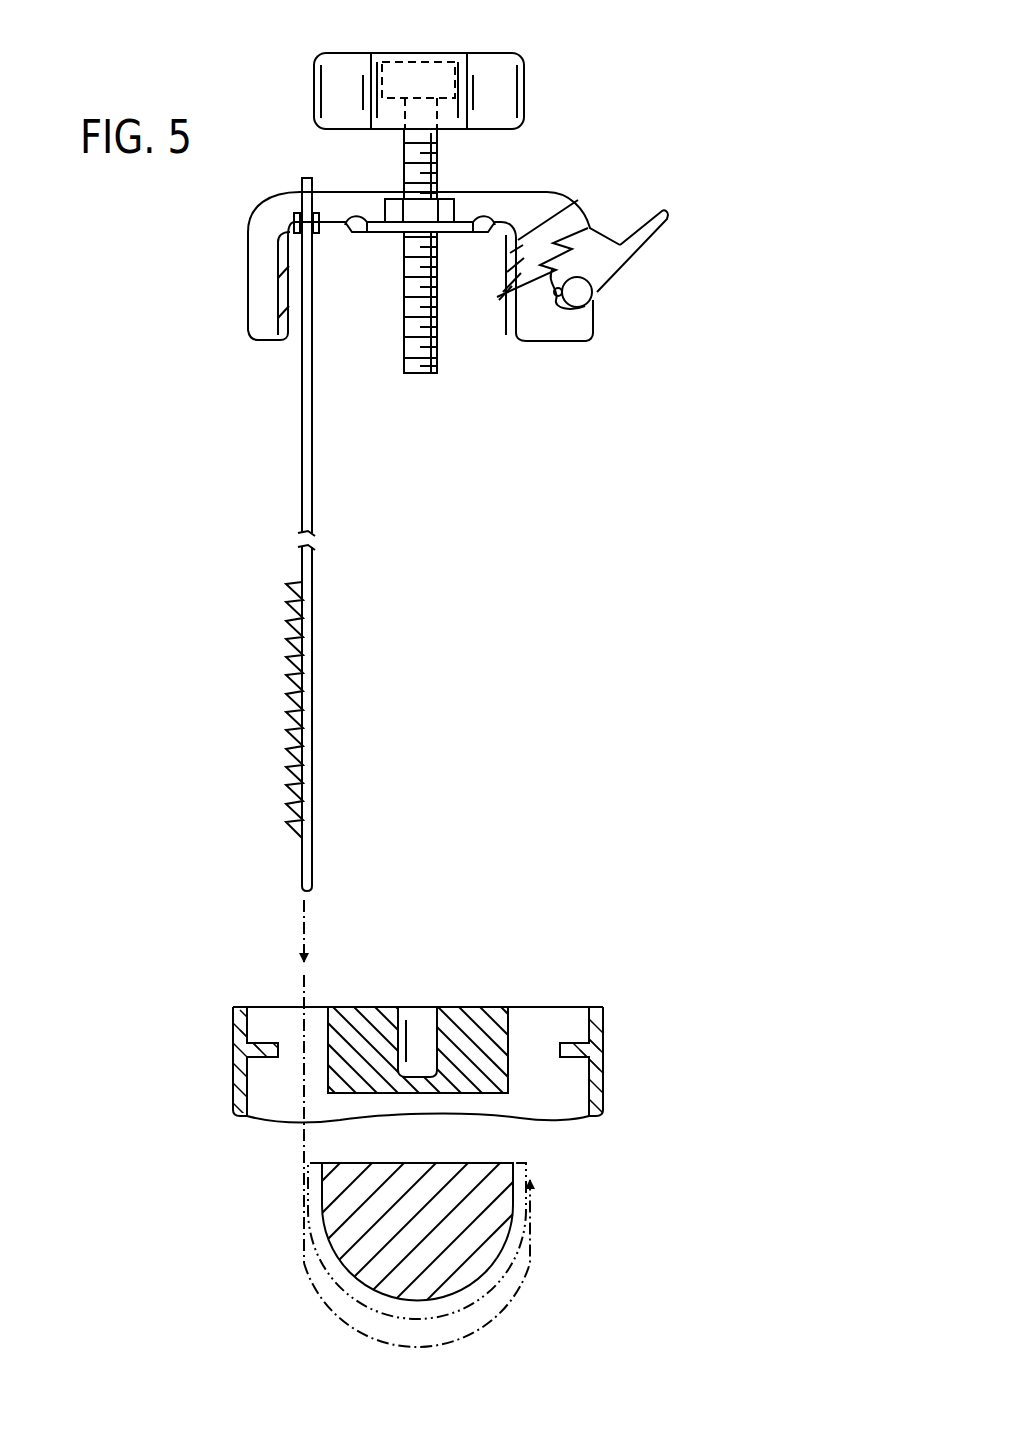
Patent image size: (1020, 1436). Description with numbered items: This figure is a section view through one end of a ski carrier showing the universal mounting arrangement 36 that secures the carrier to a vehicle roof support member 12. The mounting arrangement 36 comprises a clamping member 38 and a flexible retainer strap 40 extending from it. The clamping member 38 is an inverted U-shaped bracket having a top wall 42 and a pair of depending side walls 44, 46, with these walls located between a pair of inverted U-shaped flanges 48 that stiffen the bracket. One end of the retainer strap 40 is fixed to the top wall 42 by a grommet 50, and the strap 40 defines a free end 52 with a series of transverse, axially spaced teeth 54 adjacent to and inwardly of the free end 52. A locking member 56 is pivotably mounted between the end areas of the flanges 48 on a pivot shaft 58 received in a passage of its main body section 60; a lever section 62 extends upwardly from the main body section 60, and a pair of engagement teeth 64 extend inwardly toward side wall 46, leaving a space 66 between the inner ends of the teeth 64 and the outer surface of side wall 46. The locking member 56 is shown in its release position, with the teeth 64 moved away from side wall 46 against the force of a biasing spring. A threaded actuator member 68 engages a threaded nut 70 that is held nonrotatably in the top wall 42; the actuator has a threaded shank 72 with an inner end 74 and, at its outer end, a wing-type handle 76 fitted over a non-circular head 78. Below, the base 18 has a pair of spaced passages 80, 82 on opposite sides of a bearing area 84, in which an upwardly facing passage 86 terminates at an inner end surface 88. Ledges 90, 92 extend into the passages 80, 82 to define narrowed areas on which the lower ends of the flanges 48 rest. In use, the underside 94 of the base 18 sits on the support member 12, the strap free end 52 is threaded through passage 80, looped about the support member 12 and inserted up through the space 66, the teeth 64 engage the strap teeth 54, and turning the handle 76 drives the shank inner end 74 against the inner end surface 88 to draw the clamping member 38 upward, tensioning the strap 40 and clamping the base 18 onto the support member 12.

The support member 12 is at (515, 1240).
The base 18 is at (406, 1068).
The universal mounting arrangement 36 is at (377, 278).
The clamping member 38 is at (632, 261).
The retainer strap 40 is at (300, 465).
The top wall 42 is at (345, 223).
The side wall 44 is at (278, 262).
The side wall 46 is at (578, 215).
The flanges 48 is at (545, 192).
The grommet 50 is at (298, 222).
The free end 52 is at (312, 742).
The teeth 54 is at (287, 582).
The locking member 56 is at (628, 262).
The pivot shaft 58 is at (592, 298).
The main body section 60 is at (572, 308).
The lever section 62 is at (660, 232).
The engagement teeth 64 is at (506, 290).
The space 66 is at (538, 332).
The threaded actuator member 68 is at (398, 302).
The threaded nut 70 is at (440, 208).
The threaded shank 72 is at (408, 369).
The inner end 74 is at (420, 374).
The wing-type handle 76 is at (500, 53).
The non-circular head 78 is at (418, 62).
The passage 80 is at (268, 1007).
The passage 82 is at (540, 1007).
The bearing area 84 is at (478, 1007).
The upwardly facing passage 86 is at (433, 1007).
The inner end surface 88 is at (418, 1072).
The ledge 90 is at (255, 1042).
The ledge 92 is at (578, 1030).
The underside 94 is at (272, 1128).